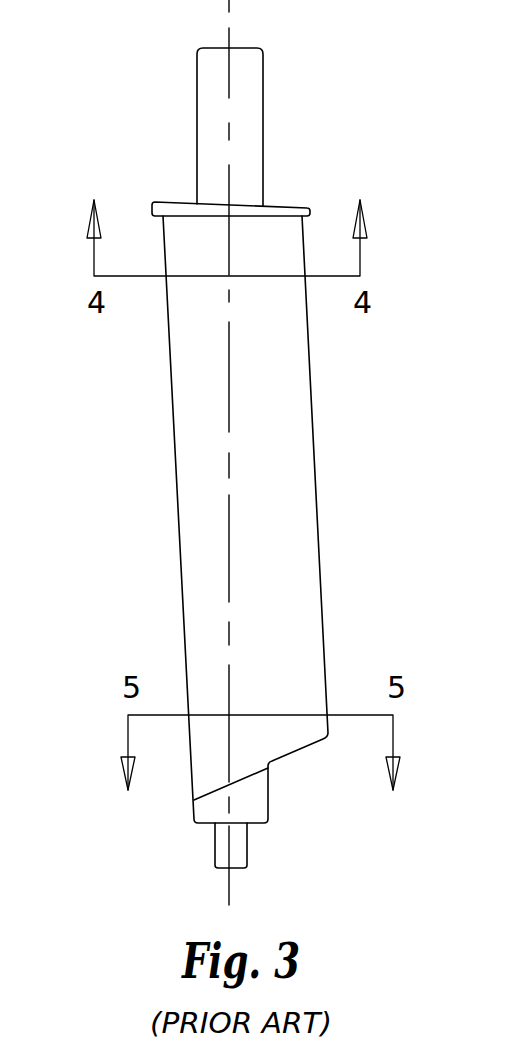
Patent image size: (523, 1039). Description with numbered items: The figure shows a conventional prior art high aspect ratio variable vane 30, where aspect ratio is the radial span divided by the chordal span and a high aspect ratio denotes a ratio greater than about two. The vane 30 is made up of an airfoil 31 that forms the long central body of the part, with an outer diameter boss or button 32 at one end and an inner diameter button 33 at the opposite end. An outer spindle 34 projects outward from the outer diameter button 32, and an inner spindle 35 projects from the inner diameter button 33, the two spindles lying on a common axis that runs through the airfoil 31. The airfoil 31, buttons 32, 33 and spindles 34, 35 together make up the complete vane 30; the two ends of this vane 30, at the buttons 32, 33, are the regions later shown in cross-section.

The high aspect ratio variable vane 30 is at (108, 97).
The airfoil 31 is at (315, 487).
The outer diameter button 32 is at (283, 203).
The inner diameter button 33 is at (268, 795).
The outer spindle 34 is at (263, 87).
The inner spindle 35 is at (215, 850).